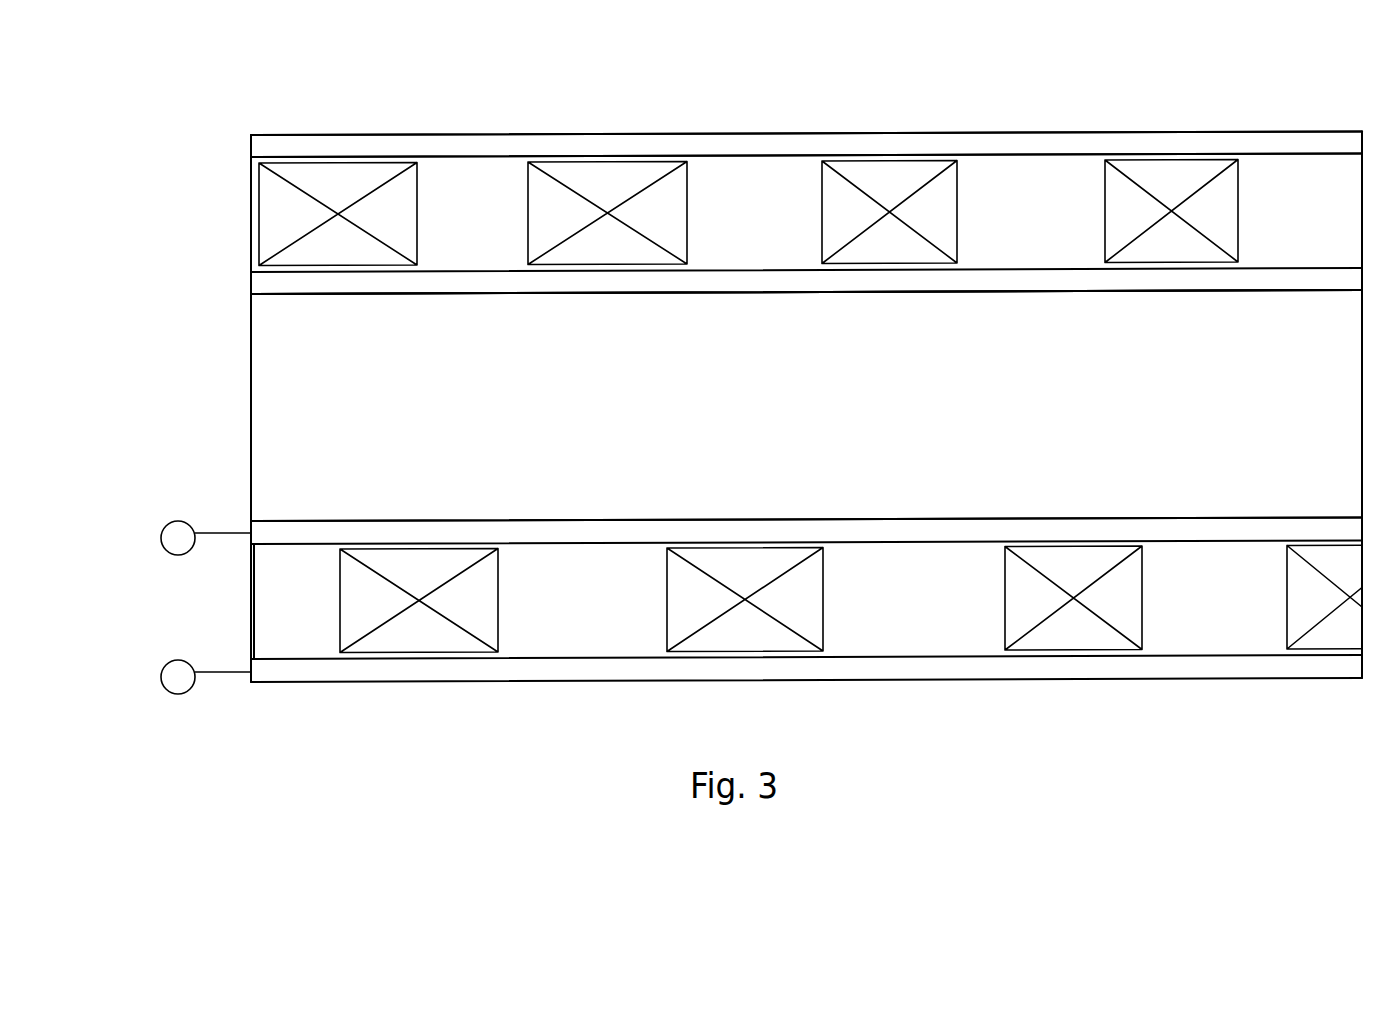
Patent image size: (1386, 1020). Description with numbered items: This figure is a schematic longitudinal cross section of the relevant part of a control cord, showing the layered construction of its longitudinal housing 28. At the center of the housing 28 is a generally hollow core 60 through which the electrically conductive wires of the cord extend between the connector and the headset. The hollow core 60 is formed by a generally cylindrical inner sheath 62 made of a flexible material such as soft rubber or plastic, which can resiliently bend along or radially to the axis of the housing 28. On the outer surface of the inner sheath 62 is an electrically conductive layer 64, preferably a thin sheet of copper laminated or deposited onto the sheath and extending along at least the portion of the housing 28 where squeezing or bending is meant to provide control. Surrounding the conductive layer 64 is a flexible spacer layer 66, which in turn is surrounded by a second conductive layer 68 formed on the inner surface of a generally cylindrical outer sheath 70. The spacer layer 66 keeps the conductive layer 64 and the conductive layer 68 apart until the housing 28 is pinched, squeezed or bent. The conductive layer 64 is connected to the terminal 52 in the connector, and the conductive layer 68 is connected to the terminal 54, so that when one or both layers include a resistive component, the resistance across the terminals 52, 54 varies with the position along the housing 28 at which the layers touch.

The longitudinal housing 28 is at (648, 134).
The outer sheath 70 is at (1060, 143).
The conductive layer 68 is at (782, 156).
The spacer layer 66 is at (298, 190).
The conductive layer 64 is at (475, 270).
The inner sheath 62 is at (277, 285).
The hollow core 60 is at (302, 460).
The terminal 52 is at (168, 552).
The terminal 54 is at (168, 691).